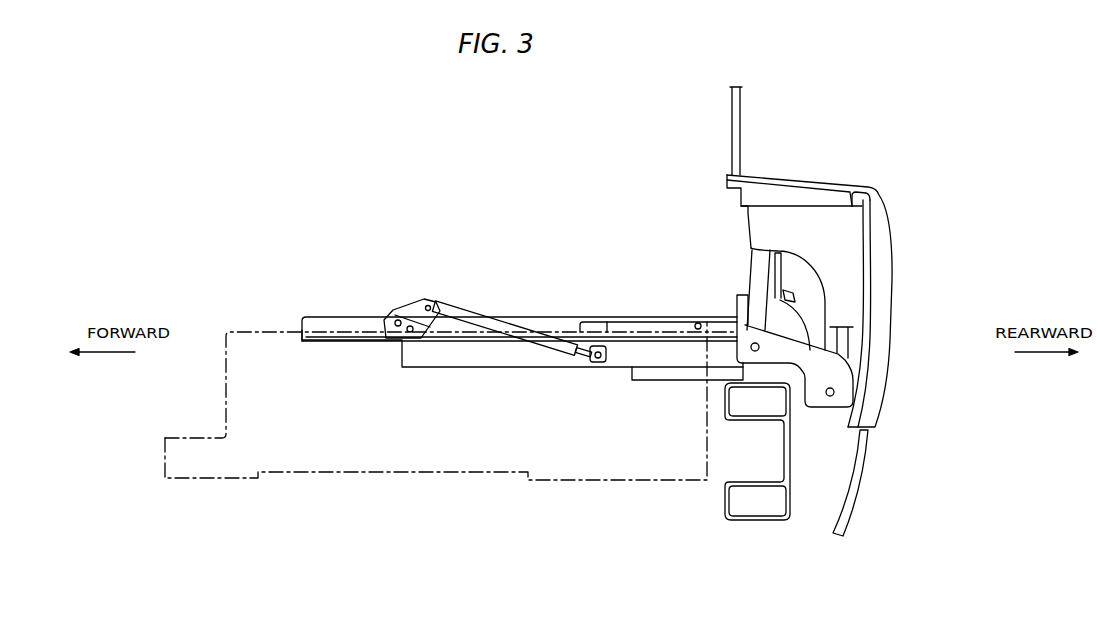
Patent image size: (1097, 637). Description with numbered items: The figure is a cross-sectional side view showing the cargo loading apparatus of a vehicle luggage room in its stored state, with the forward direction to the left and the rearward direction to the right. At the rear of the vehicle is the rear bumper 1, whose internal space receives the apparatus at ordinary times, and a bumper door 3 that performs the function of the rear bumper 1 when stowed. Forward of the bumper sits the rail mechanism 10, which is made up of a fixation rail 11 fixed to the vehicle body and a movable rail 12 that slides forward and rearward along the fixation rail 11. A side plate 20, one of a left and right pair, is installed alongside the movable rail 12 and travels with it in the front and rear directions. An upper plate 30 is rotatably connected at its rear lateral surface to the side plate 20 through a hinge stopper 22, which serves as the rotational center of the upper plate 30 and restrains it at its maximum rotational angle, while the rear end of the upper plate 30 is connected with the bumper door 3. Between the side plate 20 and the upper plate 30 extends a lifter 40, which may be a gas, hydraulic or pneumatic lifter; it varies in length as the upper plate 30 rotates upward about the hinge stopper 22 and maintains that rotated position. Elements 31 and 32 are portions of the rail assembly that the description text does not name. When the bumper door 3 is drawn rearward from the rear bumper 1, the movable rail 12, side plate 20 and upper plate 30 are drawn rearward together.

The rear bumper 1 is at (862, 483).
The bumper door 3 is at (885, 287).
The rail mechanism 10 is at (763, 520).
The fixation rail 11 is at (658, 382).
The movable rail 12 is at (548, 362).
The side plate 20 is at (347, 472).
The hinge stopper 22 is at (698, 322).
The upper plate 30 is at (313, 317).
The lower rail 31 is at (558, 318).
The upper rail 32 is at (347, 325).
The lifter 40 is at (460, 315).